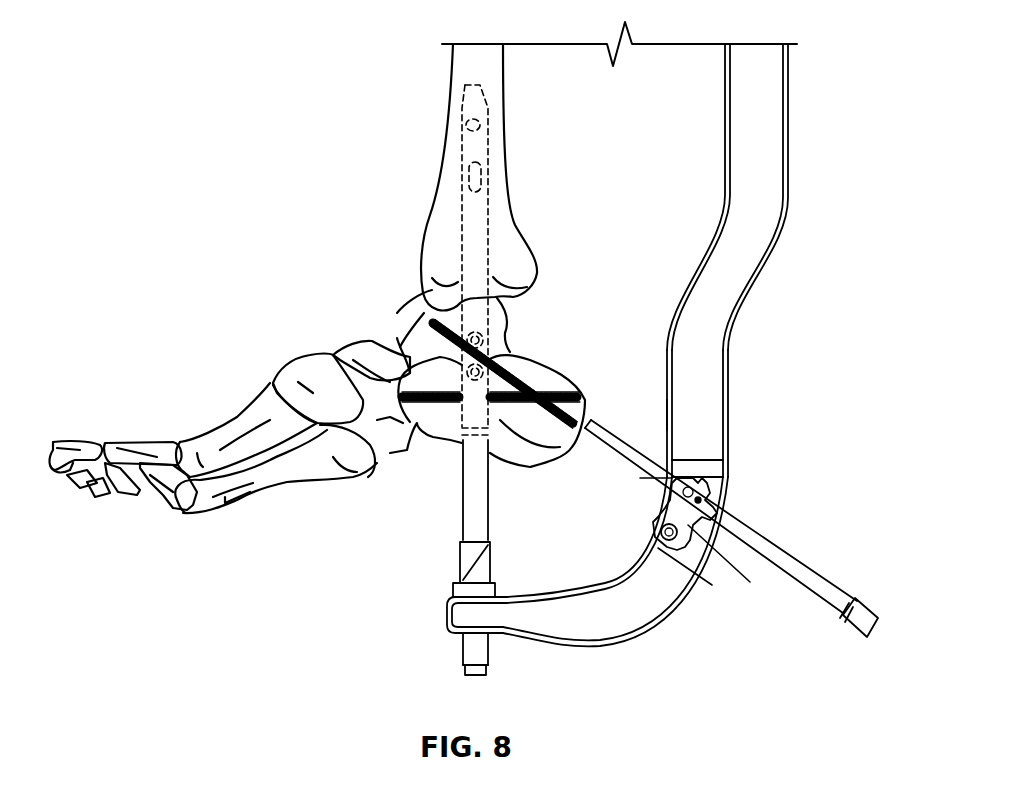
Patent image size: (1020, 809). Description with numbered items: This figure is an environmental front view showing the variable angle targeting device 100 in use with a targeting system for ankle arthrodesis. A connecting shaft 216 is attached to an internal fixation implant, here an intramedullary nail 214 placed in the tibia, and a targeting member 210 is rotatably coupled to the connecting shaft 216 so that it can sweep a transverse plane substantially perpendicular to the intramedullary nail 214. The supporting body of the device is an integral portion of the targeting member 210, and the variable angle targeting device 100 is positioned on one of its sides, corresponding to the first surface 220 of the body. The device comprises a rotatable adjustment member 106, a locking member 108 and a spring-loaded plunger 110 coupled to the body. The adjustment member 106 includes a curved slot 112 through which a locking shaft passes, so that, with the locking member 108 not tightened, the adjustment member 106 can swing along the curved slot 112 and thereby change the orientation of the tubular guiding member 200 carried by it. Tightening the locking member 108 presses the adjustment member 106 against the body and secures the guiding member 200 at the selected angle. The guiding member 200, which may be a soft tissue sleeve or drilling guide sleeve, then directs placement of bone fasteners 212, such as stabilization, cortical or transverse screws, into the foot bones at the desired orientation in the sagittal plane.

The variable angle targeting device 100 is at (740, 462).
The rotatable adjustment member 106 is at (690, 533).
The locking member 108 is at (670, 473).
The spring-loaded plunger 110 is at (660, 530).
The curved slot 112 is at (724, 492).
The tubular guiding member 200 is at (797, 565).
The targeting member 210 is at (725, 138).
The bone fastener 212 is at (433, 323).
The intramedullary nail 214 is at (477, 237).
The connecting shaft 216 is at (470, 493).
The first surface 220 is at (690, 389).